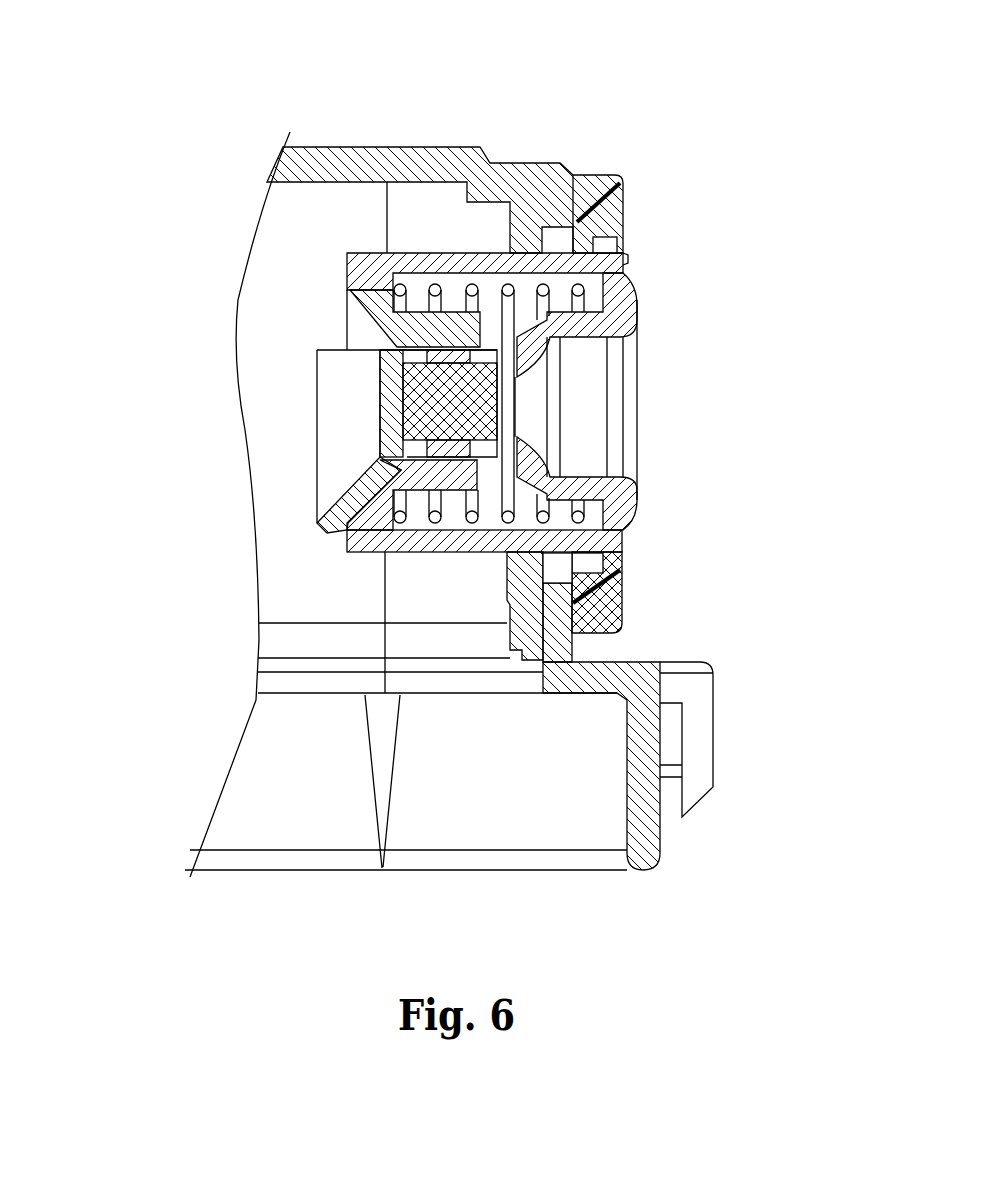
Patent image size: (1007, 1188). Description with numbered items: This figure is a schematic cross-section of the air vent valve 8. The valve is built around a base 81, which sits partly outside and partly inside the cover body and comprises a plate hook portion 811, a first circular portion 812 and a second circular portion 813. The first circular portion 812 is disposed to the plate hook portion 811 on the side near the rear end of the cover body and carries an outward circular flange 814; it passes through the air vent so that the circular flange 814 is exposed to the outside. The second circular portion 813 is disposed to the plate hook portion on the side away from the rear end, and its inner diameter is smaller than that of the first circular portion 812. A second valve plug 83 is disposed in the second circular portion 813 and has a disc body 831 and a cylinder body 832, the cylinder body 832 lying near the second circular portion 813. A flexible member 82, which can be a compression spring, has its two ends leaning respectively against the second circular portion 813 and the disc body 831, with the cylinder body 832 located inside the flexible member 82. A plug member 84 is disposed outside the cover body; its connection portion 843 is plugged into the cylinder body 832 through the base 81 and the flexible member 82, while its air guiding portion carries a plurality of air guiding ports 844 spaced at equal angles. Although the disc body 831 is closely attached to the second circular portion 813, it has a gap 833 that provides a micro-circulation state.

The air vent valve 8 is at (672, 410).
The base 81 is at (634, 271).
The plate hook portion 811 is at (545, 612).
The first circular portion 812 is at (627, 191).
The second circular portion 813 is at (432, 182).
The circular flange 814 is at (625, 248).
The flexible member 82 is at (590, 540).
The second valve plug 83 is at (322, 398).
The disc body 831 is at (385, 498).
The cylinder body 832 is at (393, 337).
The gap 833 is at (327, 336).
The plug member 84 is at (645, 509).
The connection portion 843 is at (400, 411).
The air guiding ports 844 is at (478, 528).